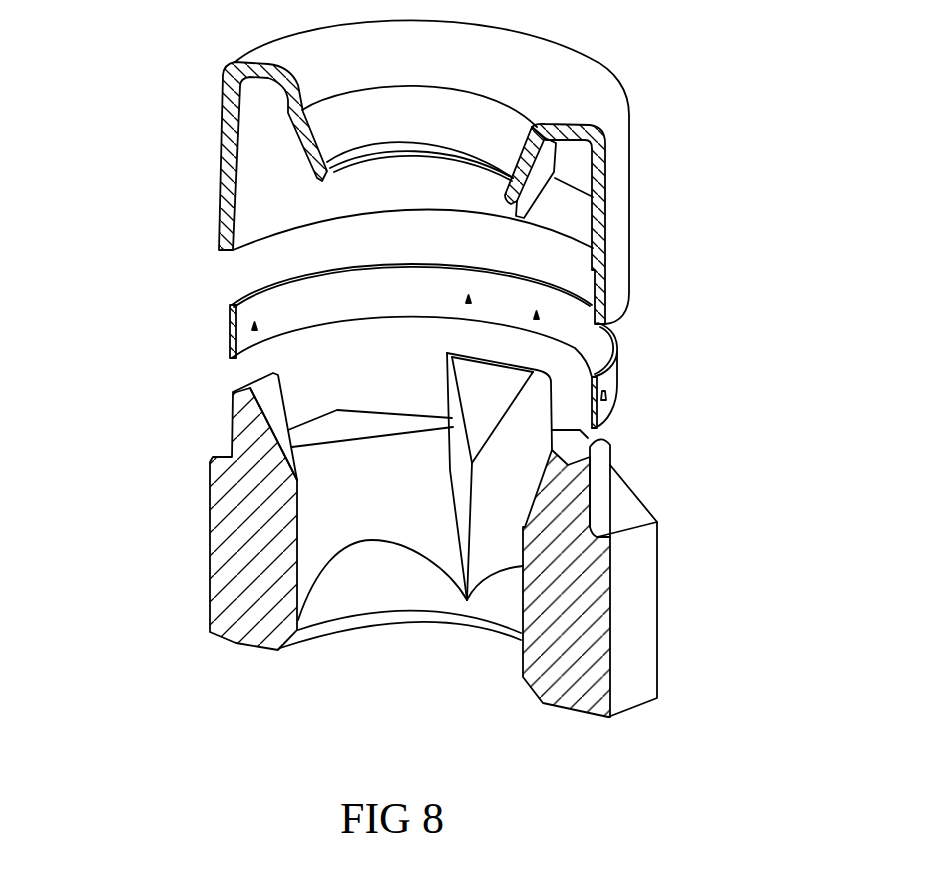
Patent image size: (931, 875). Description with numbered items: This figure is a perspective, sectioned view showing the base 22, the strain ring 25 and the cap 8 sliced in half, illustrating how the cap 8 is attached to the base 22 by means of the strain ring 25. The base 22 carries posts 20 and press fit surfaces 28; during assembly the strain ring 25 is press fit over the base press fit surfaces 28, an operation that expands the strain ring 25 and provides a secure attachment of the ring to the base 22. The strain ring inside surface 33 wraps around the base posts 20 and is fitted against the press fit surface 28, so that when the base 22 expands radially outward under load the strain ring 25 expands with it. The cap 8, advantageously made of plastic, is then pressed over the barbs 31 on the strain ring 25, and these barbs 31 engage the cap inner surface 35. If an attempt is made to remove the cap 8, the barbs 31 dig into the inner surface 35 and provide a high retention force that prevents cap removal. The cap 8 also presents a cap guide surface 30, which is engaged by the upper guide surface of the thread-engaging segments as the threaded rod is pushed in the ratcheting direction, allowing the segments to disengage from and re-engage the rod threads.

The cap 8 is at (630, 143).
The cap inner surface 35 is at (287, 197).
The strain ring inside surface 33 is at (230, 307).
The cap guide surface 30 is at (550, 188).
The strain ring 25 is at (606, 371).
The barbs 31 is at (613, 392).
The base 22 is at (657, 593).
The base press fit surfaces 28 is at (232, 443).
The posts 20 is at (248, 387).